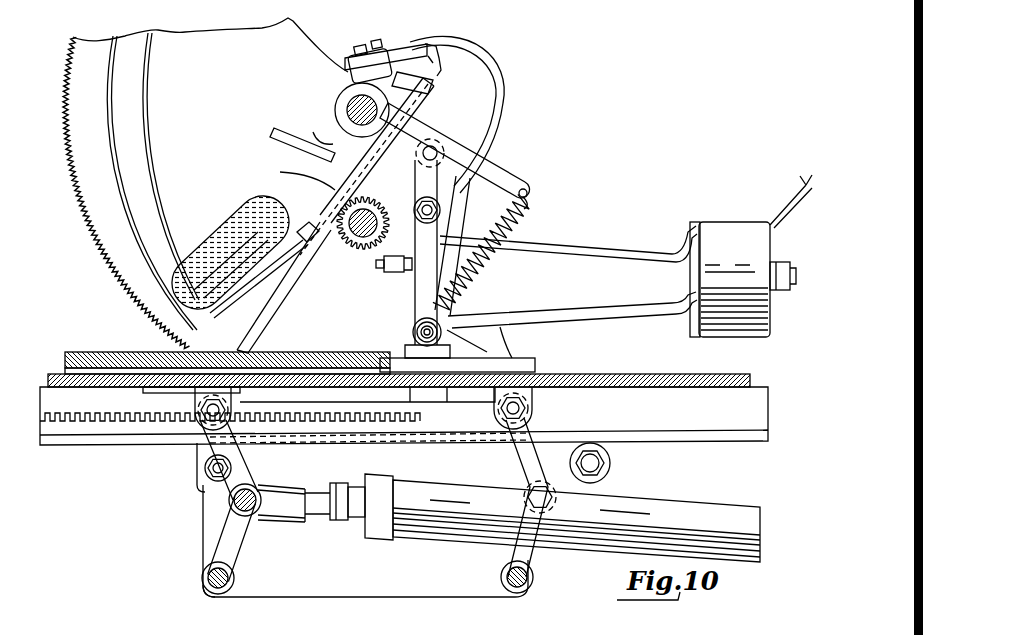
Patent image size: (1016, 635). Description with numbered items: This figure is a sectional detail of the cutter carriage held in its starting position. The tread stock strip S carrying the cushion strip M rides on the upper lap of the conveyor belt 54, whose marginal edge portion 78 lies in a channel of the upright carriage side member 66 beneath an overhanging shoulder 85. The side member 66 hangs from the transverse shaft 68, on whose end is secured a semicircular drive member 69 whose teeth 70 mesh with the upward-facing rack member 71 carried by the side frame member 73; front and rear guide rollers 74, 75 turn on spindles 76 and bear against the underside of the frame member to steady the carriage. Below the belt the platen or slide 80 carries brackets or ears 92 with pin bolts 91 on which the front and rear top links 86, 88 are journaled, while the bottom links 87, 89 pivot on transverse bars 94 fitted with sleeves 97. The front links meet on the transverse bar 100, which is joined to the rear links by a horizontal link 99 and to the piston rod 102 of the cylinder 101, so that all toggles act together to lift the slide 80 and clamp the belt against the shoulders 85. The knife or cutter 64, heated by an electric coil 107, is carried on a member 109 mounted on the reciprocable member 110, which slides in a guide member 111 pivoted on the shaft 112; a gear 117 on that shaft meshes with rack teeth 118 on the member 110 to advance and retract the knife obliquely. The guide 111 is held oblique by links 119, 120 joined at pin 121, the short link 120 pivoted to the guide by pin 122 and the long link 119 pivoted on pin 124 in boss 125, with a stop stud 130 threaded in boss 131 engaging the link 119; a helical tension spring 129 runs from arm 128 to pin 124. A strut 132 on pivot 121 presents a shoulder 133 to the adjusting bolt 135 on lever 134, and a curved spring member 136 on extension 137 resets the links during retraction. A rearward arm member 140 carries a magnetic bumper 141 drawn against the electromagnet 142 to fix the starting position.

The drive member 69 is at (190, 47).
The teeth 70 is at (68, 158).
The lever 134 is at (362, 58).
The adjusting bolt 135 is at (343, 70).
The extension portion 137 is at (428, 62).
The curved spring member 136 is at (500, 70).
The transverse shaft 68 is at (352, 113).
The shoulder 133 is at (302, 134).
The guide member 111 is at (317, 180).
The reciprocable member 110 is at (427, 104).
The member 109 is at (260, 305).
The rack teeth 118 is at (325, 266).
The knife or cutter 64 is at (210, 318).
The electric heating unit or coil 107 is at (256, 206).
The gear 117 is at (362, 241).
The transverse shaft 112 is at (355, 253).
The boss 131 is at (393, 273).
The strut 132 is at (419, 202).
The pin 122 is at (437, 145).
The pin 121 is at (437, 225).
The link 120 is at (483, 161).
The arm 128 is at (528, 185).
The helical tension spring 129 is at (527, 228).
The link 119 is at (472, 281).
The pivot pin 124 is at (466, 326).
The arm member 140 is at (600, 261).
The bumper 141 is at (694, 238).
The electromagnet or solenoid 142 is at (715, 223).
The cushion strip M is at (118, 352).
The strip S is at (62, 355).
The shoulder 85 is at (520, 356).
The marginal edge portion 78 is at (543, 374).
The conveyor belt 54 is at (637, 377).
The side frame member 73 is at (708, 439).
The rack member 71 is at (90, 413).
The platen or slide 80 is at (442, 388).
The boss 125 is at (408, 352).
The guide or stop stud 130 is at (416, 328).
The bracket or ear 92 is at (203, 425).
The pin bolt 91 is at (233, 427).
The top link 86 is at (197, 468).
The spindle 76 is at (245, 469).
The rear guide roller 75 is at (610, 474).
The front guide roller 74 is at (182, 480).
The bottom link 87 is at (223, 543).
The transverse bar 100 is at (247, 512).
The horizontal link 99 is at (325, 488).
The piston rod 102 is at (320, 518).
The cylinder 101 is at (668, 508).
The top link 88 is at (513, 456).
The bottom link 89 is at (535, 558).
The transverse bar 94 is at (202, 580).
The side member 66 is at (438, 603).
The sleeve 97 is at (205, 600).